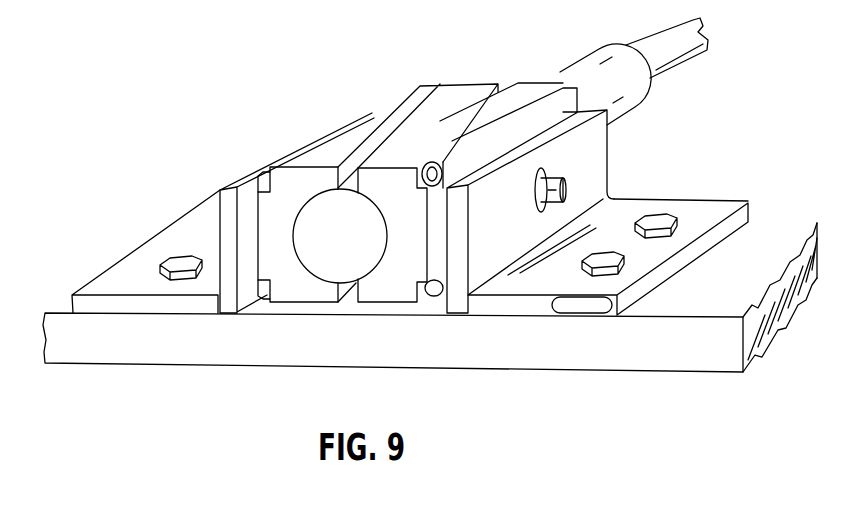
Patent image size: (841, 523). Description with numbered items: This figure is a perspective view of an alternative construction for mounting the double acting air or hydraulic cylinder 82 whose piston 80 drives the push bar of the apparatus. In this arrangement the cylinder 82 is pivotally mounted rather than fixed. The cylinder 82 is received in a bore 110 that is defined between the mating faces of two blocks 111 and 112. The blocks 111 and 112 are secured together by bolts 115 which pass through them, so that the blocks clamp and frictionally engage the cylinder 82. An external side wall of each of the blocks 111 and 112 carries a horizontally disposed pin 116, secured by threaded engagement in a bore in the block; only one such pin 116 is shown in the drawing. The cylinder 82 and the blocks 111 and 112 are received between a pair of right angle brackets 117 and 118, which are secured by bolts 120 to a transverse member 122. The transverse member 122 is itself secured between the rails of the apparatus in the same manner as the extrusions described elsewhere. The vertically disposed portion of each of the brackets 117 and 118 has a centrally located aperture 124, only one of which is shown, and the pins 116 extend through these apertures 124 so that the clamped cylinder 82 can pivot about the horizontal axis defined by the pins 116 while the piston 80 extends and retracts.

The piston 80 is at (681, 58).
The cylinder 82 is at (562, 67).
The bore 110 is at (370, 267).
The block 111 is at (349, 142).
The block 112 is at (600, 131).
The bolts 115 is at (438, 163).
The pin 116 is at (566, 189).
The right angle bracket 117 is at (170, 308).
The right angle bracket 118 is at (551, 305).
The bolts 120 is at (662, 222).
The transverse member 122 is at (653, 362).
The aperture 124 is at (543, 210).